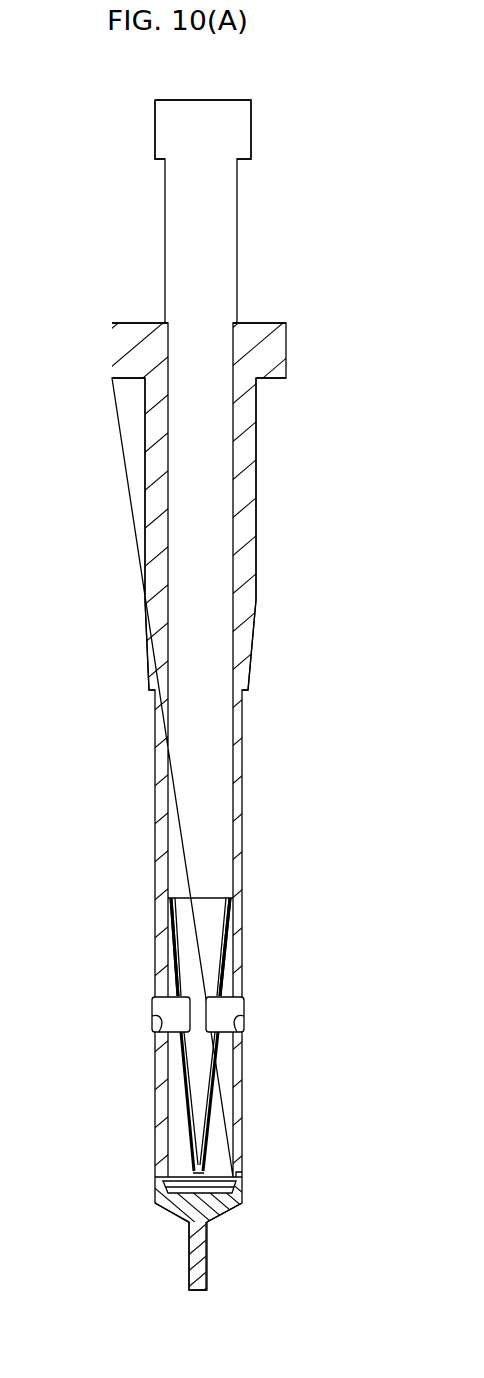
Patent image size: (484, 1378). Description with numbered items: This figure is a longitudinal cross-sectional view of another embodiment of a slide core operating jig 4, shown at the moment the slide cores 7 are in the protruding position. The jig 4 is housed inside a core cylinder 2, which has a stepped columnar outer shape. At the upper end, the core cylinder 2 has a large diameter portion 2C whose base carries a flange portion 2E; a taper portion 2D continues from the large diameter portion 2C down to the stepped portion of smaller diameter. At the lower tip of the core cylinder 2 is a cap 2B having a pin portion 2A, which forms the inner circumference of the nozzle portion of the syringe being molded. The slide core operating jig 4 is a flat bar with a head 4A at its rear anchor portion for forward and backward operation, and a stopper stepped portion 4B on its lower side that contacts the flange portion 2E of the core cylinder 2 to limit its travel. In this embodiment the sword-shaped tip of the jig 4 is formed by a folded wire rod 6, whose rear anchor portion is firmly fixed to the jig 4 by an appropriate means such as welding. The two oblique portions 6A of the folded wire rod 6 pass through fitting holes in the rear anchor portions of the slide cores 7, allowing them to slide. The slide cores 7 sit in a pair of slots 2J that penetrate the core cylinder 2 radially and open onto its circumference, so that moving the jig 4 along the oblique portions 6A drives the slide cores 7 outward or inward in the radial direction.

The core cylinder 2 is at (145, 532).
The pin portion 2A is at (206, 1250).
The cap 2B is at (156, 1197).
The large diameter portion 2C is at (256, 481).
The taper portion 2D is at (252, 666).
The flange portion 2E is at (286, 346).
The slots 2J is at (151, 1018).
The slide core operating jig 4 is at (240, 251).
The head 4A is at (155, 131).
The stopper stepped portion 4B is at (166, 323).
The folded wire rod 6 is at (183, 1074).
The oblique portions 6A is at (176, 994).
The slide cores 7 is at (152, 1004).